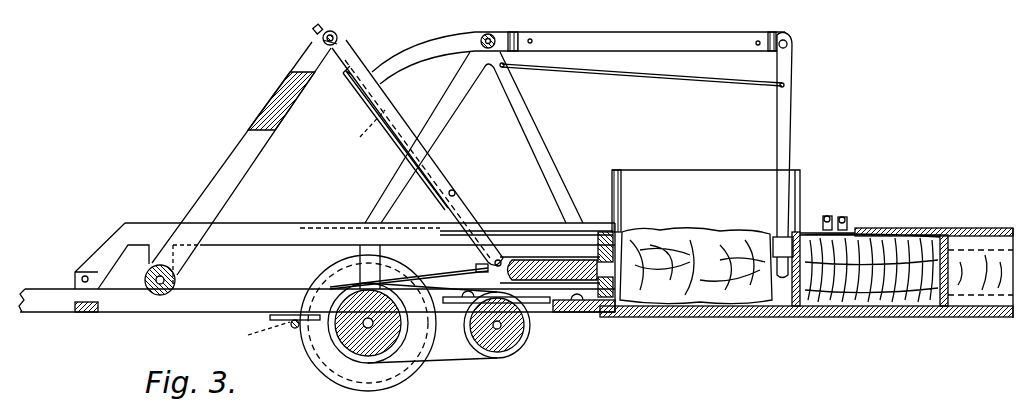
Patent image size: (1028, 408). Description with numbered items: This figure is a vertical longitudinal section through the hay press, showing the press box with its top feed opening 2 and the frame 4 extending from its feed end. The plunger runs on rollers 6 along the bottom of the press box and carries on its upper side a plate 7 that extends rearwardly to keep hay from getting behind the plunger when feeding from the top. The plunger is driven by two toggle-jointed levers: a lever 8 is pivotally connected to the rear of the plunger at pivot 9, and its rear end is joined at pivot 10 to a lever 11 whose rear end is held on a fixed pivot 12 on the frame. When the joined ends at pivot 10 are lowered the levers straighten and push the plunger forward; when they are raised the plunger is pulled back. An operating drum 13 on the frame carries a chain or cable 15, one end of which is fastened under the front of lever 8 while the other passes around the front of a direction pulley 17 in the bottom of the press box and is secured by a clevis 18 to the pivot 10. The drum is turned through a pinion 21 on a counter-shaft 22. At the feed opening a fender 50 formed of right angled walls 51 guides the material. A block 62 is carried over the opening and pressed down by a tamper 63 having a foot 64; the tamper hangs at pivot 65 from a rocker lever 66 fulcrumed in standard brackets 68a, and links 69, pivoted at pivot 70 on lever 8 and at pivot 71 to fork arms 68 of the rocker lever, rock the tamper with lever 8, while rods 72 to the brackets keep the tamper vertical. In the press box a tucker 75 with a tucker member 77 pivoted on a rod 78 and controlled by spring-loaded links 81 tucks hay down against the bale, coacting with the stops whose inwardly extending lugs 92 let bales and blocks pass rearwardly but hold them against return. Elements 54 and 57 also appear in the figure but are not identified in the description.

The feed opening 2 is at (706, 226).
The frame 4 is at (313, 228).
The rollers 6 is at (468, 305).
The plate 7 is at (541, 231).
The lever 8 is at (482, 203).
The pivot 9 is at (486, 268).
The pivot 10 is at (322, 38).
The lever 11 is at (237, 160).
The fixed pivot 12 is at (146, 274).
The operating drum 13 is at (372, 348).
The chain or cable 15 is at (445, 359).
The direction pulley 17 is at (515, 352).
The clevis 18 is at (343, 74).
The pinion 21 is at (261, 337).
The counter-shaft 22 is at (291, 328).
The fender 50 is at (695, 170).
The right angled walls 51 is at (612, 180).
The wheel 54 is at (352, 373).
The chamber wall 57 is at (748, 176).
The block 62 is at (789, 302).
The tamper 63 is at (783, 122).
The foot 64 is at (773, 249).
The pivot 65 is at (793, 45).
The rocker lever 66 is at (657, 44).
The fork arms 68 is at (423, 51).
The standard brackets 68a is at (537, 133).
The links 69 is at (368, 131).
The pivot 70 is at (456, 193).
The pivot 71 is at (372, 72).
The rods 72 is at (724, 85).
The tucker 75 is at (836, 217).
The tucker member 77 is at (852, 233).
The rod 78 is at (816, 232).
The links 81 is at (848, 226).
The lugs 92 is at (794, 312).